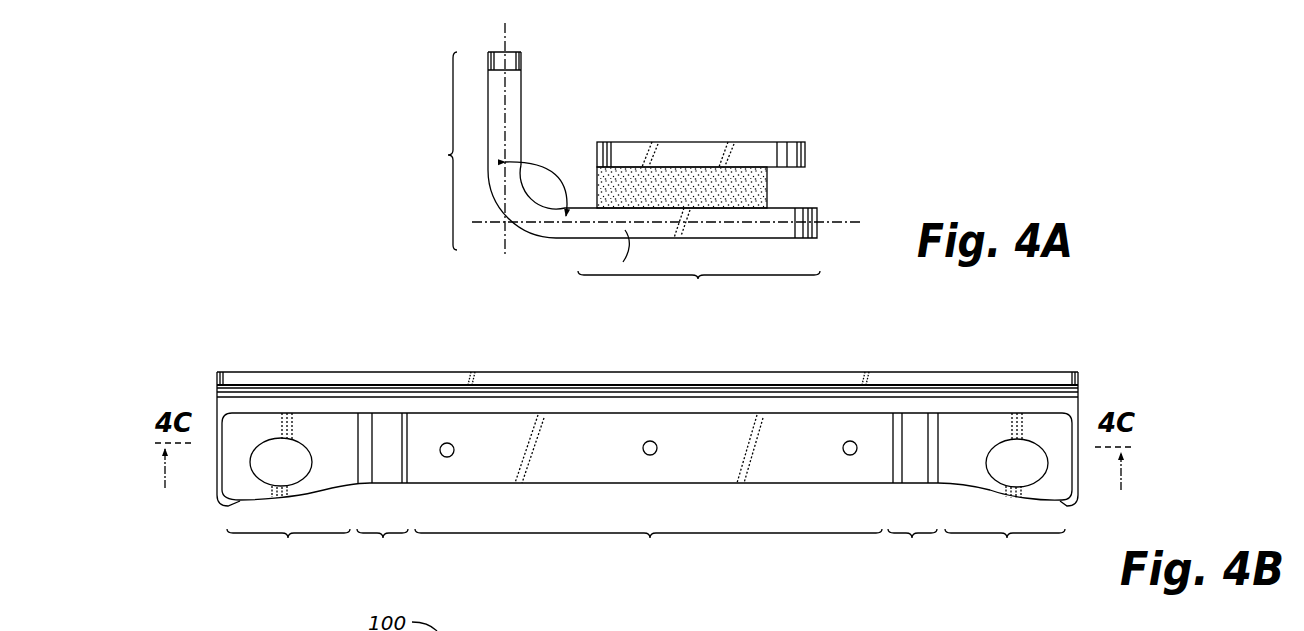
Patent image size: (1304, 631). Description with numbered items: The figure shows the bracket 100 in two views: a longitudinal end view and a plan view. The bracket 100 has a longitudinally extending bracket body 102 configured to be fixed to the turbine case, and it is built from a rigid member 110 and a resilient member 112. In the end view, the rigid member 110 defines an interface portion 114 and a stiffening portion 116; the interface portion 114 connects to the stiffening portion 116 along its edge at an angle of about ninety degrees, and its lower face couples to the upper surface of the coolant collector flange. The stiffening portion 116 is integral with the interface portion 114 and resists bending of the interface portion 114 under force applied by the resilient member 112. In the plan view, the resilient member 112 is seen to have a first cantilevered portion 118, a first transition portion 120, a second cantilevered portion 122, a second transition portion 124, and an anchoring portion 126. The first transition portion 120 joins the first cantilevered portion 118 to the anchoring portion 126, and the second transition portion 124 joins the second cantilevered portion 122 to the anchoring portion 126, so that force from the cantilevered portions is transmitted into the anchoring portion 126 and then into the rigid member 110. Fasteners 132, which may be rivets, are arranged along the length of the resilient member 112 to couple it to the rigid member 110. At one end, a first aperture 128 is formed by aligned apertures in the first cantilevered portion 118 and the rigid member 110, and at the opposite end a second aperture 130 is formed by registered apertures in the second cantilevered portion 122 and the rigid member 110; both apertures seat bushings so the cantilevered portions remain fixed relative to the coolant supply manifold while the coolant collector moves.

In FIG. 4A, the bracket 100 is at (817, 73).
In FIG. 4B, the bracket 100 is at (293, 343).
In FIG. 4A, the bracket body 102 is at (806, 152).
In FIG. 4B, the rigid member 110 is at (413, 380).
In FIG. 4A, the resilient member 112 is at (630, 152).
In FIG. 4B, the resilient member 112 is at (567, 463).
In FIG. 4A, the interface portion 114 is at (698, 290).
In FIG. 4A, the stiffening portion 116 is at (438, 147).
In FIG. 4B, the first cantilevered portion 118 is at (286, 545).
In FIG. 4B, the first transition portion 120 is at (384, 543).
In FIG. 4B, the second cantilevered portion 122 is at (1006, 546).
In FIG. 4B, the second transition portion 124 is at (912, 541).
In FIG. 4B, the anchoring portion 126 is at (652, 547).
In FIG. 4B, the first aperture 128 is at (288, 473).
In FIG. 4B, the second aperture 130 is at (1018, 465).
In FIG. 4B, the fasteners 132 is at (453, 454).